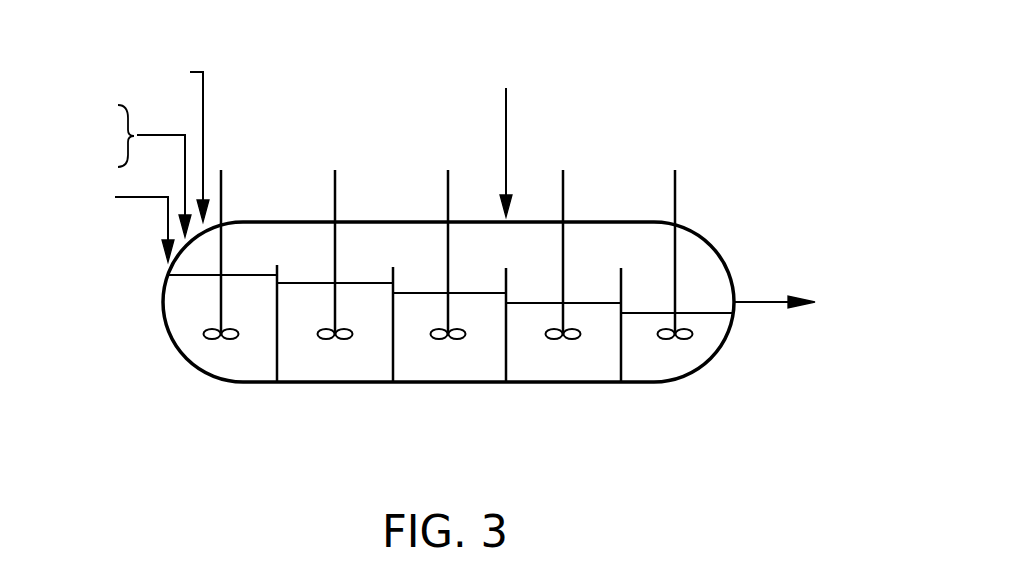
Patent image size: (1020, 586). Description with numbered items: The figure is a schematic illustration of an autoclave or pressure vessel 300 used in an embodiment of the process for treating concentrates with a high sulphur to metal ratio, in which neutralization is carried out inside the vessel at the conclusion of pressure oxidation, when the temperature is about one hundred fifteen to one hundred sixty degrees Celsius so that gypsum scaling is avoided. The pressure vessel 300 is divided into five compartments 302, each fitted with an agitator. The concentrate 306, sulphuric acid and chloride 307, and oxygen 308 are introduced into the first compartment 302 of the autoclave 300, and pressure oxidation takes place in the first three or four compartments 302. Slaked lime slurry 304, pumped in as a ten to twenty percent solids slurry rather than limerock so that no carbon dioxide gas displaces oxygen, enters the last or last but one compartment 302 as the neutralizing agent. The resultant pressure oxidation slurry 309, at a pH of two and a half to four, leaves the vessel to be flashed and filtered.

The pressure vessel 300 is at (678, 380).
The compartment 302 is at (238, 365).
The slaked lime slurry 304 is at (506, 117).
The concentrate 306 is at (205, 110).
The sulphuric acid and chloride 307 is at (187, 148).
The oxygen 308 is at (168, 218).
The resultant slurry 309 is at (765, 298).